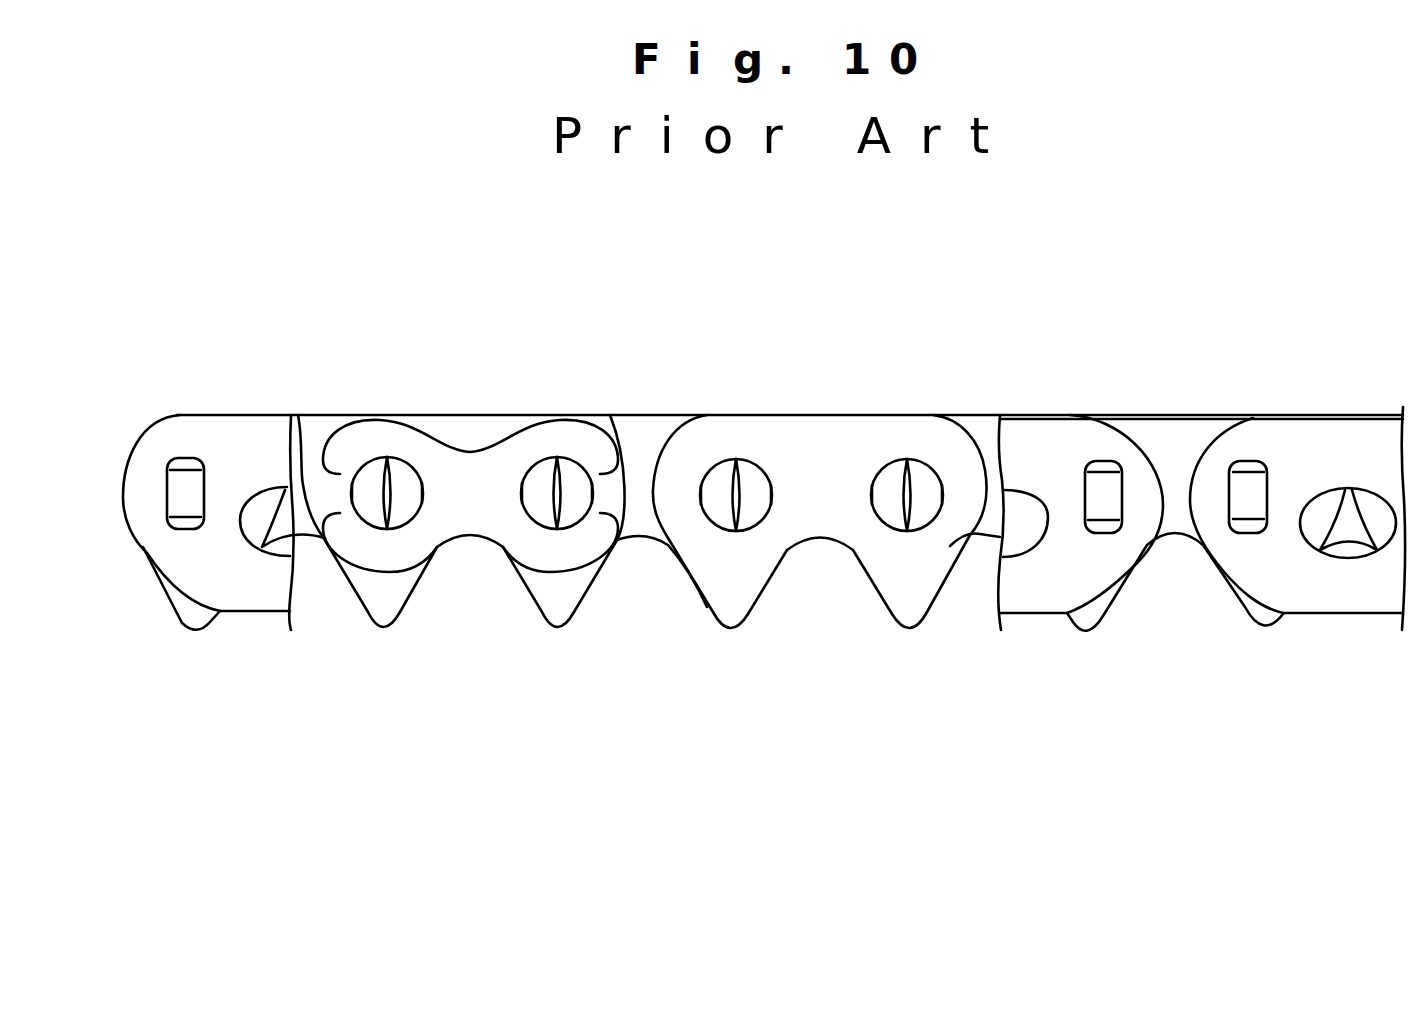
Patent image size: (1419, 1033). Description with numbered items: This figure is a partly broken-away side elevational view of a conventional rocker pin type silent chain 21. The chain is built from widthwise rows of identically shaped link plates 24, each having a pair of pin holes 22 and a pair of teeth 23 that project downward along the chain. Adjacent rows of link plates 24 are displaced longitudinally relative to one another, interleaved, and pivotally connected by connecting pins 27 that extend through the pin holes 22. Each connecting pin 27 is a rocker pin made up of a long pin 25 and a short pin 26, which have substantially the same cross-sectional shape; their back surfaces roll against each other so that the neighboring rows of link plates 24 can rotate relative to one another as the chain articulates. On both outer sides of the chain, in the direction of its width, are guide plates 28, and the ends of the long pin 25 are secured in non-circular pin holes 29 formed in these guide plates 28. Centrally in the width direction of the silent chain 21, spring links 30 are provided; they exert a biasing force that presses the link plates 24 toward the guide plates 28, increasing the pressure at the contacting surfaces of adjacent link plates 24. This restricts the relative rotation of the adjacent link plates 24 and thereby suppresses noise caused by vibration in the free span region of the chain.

The silent chain 21 is at (881, 320).
The pin holes 22 is at (737, 455).
The teeth 23 is at (388, 612).
The link plates 24 is at (457, 417).
The long pin 25 is at (750, 517).
The short pin 26 is at (717, 515).
The connecting pins 27 is at (628, 733).
The guide plates 28 is at (229, 415).
The non-circular pin holes 29 is at (1265, 510).
The spring links 30 is at (473, 473).